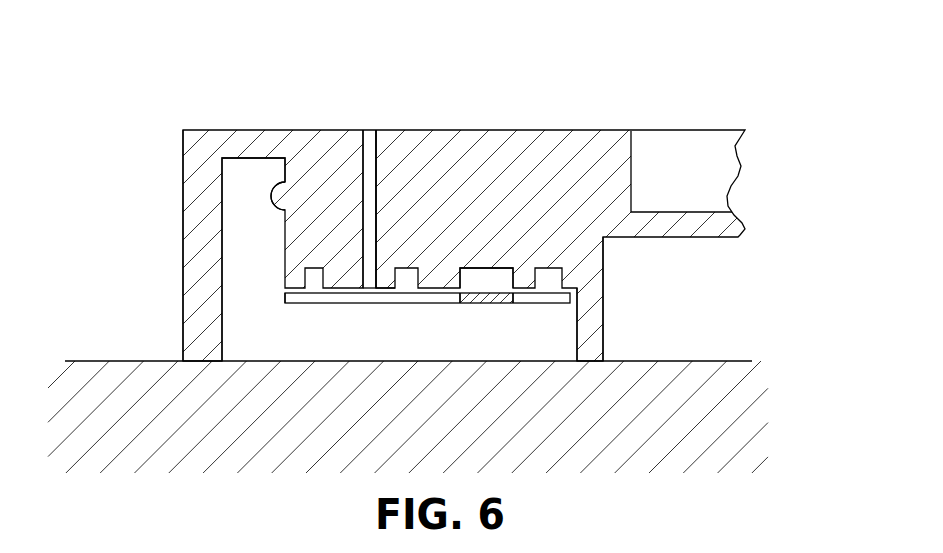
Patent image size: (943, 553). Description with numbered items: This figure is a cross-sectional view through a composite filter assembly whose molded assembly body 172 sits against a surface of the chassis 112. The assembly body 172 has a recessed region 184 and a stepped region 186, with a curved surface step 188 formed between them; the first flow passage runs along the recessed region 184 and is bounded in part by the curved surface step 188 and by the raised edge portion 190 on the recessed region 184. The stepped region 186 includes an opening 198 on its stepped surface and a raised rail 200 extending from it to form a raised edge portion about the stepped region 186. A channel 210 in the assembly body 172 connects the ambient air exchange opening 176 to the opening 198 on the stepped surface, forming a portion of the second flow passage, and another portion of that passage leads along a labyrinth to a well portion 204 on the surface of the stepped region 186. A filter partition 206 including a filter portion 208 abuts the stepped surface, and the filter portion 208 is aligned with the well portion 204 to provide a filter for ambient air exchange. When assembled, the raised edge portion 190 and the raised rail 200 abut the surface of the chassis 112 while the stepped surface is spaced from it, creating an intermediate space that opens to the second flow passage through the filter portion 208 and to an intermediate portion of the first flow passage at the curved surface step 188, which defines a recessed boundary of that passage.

The chassis 112 is at (688, 360).
The assembly body 172 is at (613, 132).
The ambient air exchange opening 176 is at (371, 130).
The recessed region 184 is at (232, 158).
The stepped region 186 is at (286, 302).
The curved surface step 188 is at (298, 158).
The raised edge portion 190 is at (182, 262).
The opening 198 is at (370, 288).
The raised rail 200 is at (593, 338).
The well portion 204 is at (487, 267).
The filter partition 206 is at (577, 293).
The filter portion 208 is at (482, 297).
The channel 210 is at (378, 196).